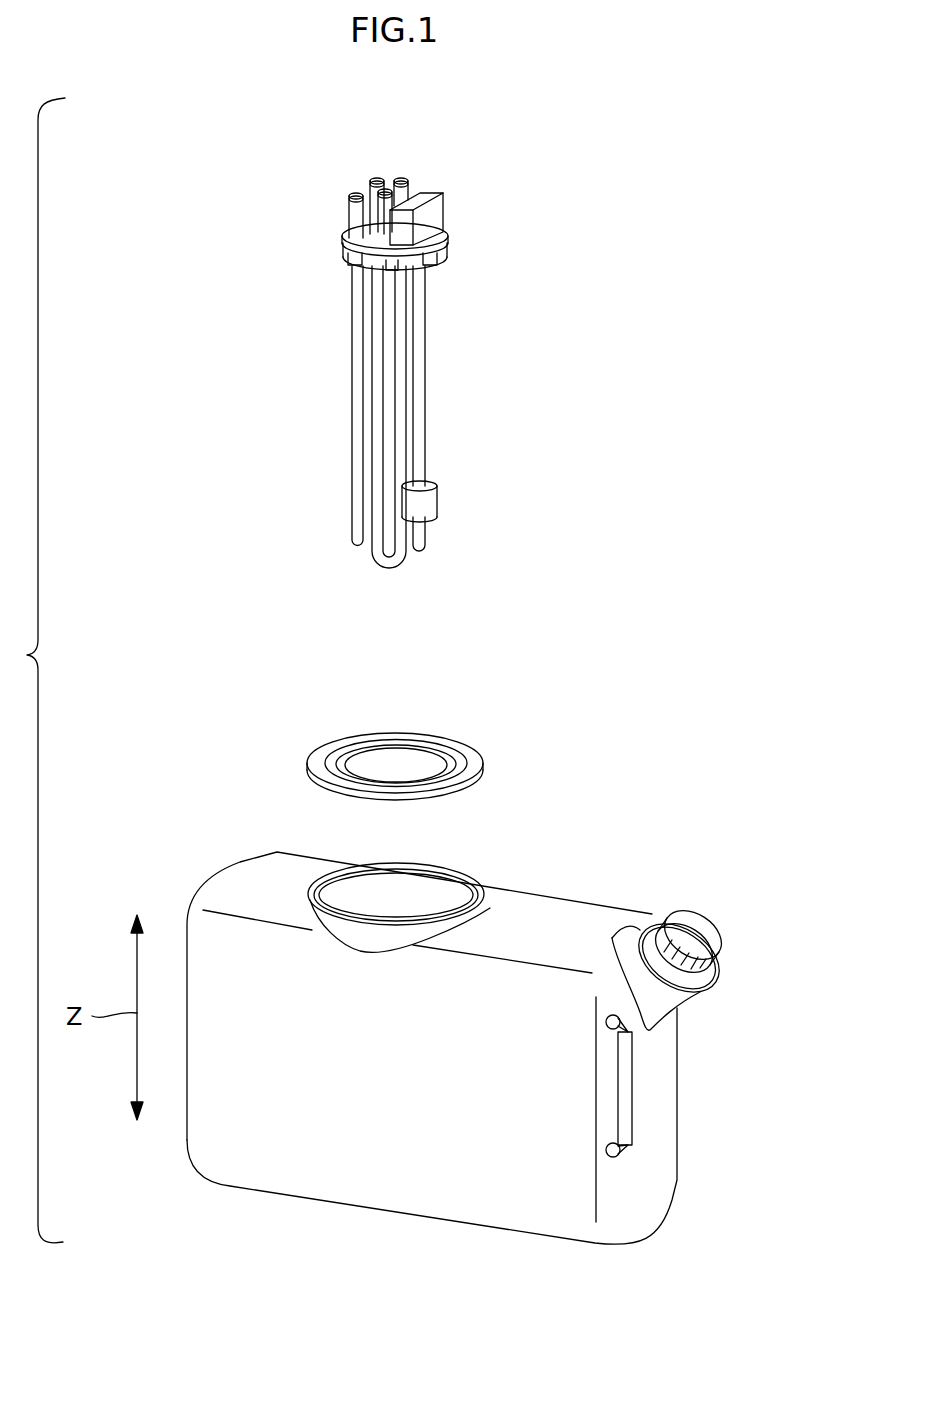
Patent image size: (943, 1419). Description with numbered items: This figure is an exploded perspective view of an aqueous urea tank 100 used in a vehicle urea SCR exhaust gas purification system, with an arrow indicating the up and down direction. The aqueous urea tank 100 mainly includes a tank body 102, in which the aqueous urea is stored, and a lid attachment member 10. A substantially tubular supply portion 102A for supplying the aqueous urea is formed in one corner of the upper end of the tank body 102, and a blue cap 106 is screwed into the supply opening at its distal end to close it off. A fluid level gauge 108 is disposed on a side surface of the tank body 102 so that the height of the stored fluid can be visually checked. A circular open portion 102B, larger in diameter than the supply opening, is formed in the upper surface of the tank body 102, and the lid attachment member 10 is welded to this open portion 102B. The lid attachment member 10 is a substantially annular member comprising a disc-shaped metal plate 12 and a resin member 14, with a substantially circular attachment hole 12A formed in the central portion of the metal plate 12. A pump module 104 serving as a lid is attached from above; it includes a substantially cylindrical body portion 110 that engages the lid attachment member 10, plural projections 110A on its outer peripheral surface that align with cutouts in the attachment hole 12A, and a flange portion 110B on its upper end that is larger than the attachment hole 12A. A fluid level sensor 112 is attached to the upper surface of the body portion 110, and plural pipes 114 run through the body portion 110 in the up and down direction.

The aqueous urea tank 100 is at (593, 685).
The lid attachment member 10 is at (380, 737).
The metal plate 12 is at (351, 751).
The attachment hole 12A is at (332, 775).
The resin member 14 is at (345, 740).
The tank body 102 is at (570, 889).
The supply portion 102A is at (700, 1003).
The open portion 102B is at (455, 888).
The pump module 104 is at (438, 339).
The cap 106 is at (718, 918).
The fluid level gauge 108 is at (633, 1093).
The body portion 110 is at (414, 271).
The projections 110A is at (397, 265).
The flange portion 110B is at (447, 232).
The fluid level sensor 112 is at (428, 197).
The pipes 114 is at (384, 176).